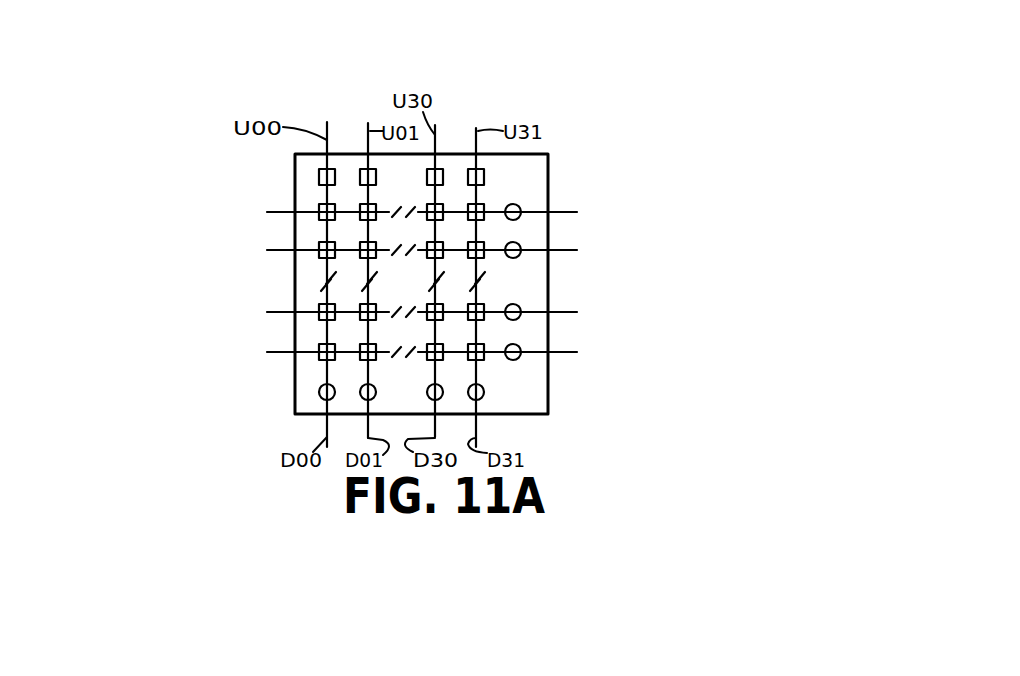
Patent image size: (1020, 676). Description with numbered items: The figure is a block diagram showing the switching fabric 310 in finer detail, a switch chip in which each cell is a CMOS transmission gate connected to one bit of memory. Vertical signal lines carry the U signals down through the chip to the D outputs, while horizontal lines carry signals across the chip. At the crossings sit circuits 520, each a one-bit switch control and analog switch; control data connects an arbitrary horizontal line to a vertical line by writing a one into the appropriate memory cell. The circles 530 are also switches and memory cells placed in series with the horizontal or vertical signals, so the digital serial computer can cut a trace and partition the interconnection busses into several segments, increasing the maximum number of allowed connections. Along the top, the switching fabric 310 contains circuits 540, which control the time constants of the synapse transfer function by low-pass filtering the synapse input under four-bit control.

The switching fabric 310 is at (580, 288).
The switch control and analog switch circuits 520 is at (431, 305).
The switches and memory cells 530 is at (526, 224).
The time constant control circuits 540 is at (366, 168).